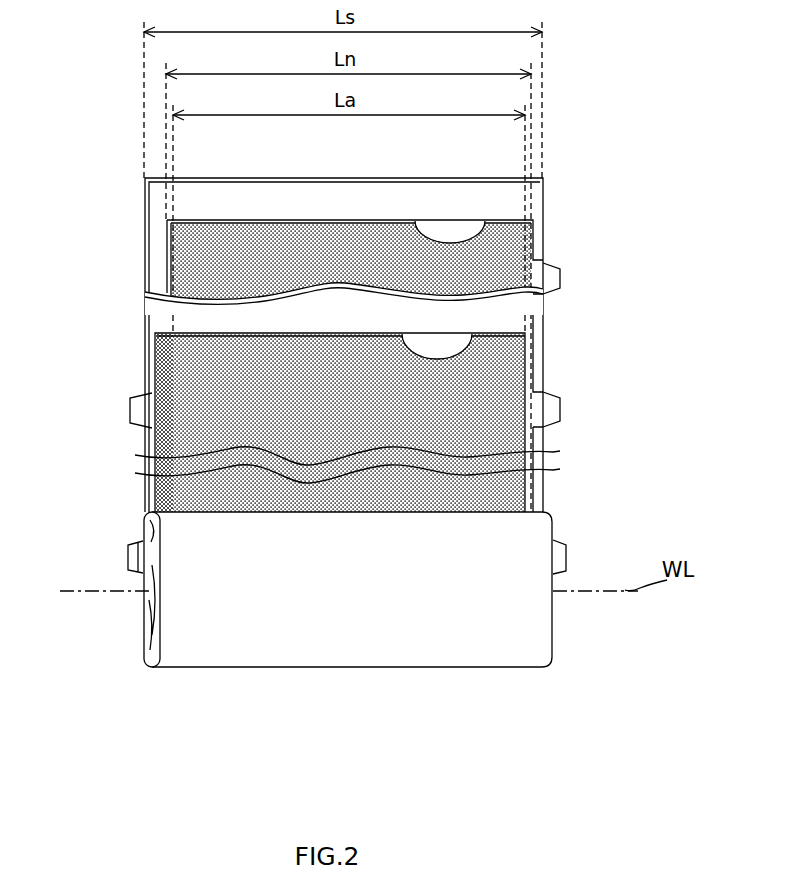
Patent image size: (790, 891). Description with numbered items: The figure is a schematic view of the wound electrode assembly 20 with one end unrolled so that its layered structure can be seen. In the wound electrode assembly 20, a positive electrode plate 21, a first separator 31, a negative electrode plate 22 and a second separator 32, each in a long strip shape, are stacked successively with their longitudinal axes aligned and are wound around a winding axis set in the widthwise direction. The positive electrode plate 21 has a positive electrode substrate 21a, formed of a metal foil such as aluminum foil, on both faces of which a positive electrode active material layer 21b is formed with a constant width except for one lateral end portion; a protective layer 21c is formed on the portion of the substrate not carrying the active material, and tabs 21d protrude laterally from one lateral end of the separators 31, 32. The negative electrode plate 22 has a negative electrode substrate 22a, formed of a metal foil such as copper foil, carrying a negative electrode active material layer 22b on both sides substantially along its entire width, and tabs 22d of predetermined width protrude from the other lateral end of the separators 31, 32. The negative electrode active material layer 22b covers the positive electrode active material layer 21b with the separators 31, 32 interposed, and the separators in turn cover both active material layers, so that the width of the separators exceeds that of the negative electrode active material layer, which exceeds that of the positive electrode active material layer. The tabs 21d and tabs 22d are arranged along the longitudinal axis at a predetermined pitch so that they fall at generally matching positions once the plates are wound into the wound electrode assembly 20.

The wound electrode assembly 20 is at (396, 640).
The positive electrode plate 21 is at (302, 423).
The positive electrode substrate 21a is at (432, 345).
The positive electrode active material layer 21b is at (202, 382).
The protective layer 21c is at (160, 344).
The tabs 21d is at (130, 417).
The negative electrode plate 22 is at (360, 372).
The negative electrode substrate 22a is at (455, 227).
The negative electrode active material layer 22b is at (520, 248).
The tabs 22d is at (561, 278).
The first separator 31 is at (543, 330).
The second separator 32 is at (543, 193).